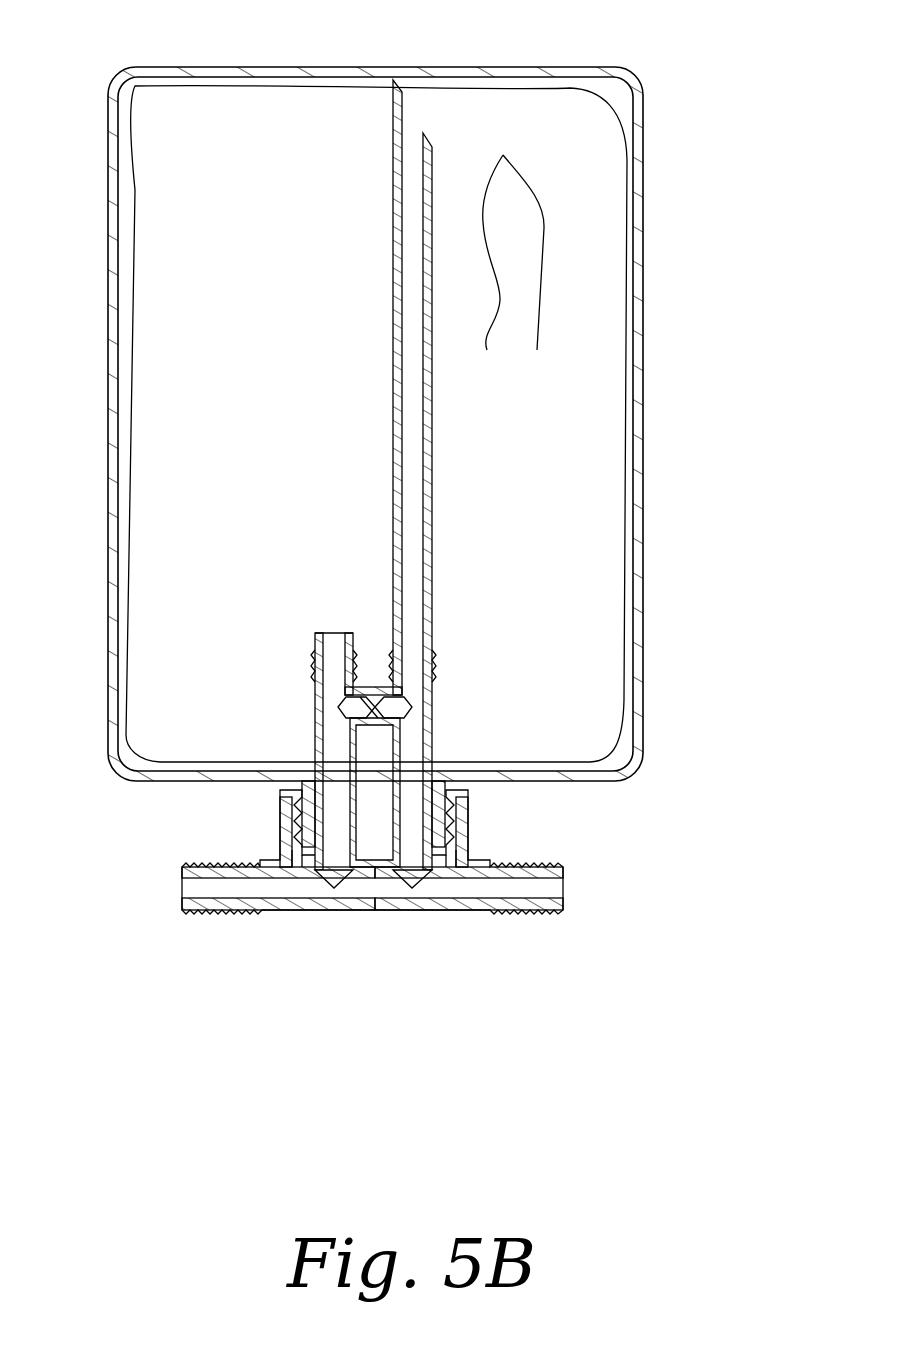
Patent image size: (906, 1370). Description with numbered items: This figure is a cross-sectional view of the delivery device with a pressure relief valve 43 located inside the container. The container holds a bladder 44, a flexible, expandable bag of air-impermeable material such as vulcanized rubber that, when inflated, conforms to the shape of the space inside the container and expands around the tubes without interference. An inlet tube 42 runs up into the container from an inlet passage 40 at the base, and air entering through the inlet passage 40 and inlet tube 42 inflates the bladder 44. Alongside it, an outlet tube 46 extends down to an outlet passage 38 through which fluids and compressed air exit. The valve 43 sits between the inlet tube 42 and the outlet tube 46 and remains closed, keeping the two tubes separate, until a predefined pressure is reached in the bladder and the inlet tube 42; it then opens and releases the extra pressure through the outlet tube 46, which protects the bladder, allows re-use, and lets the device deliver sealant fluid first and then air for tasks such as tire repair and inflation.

The outlet passage 38 is at (537, 887).
The inlet passage 40 is at (220, 888).
The inlet tube 42 is at (335, 655).
The pressure relief valve 43 is at (370, 710).
The bladder 44 is at (538, 515).
The outlet tube 46 is at (412, 138).